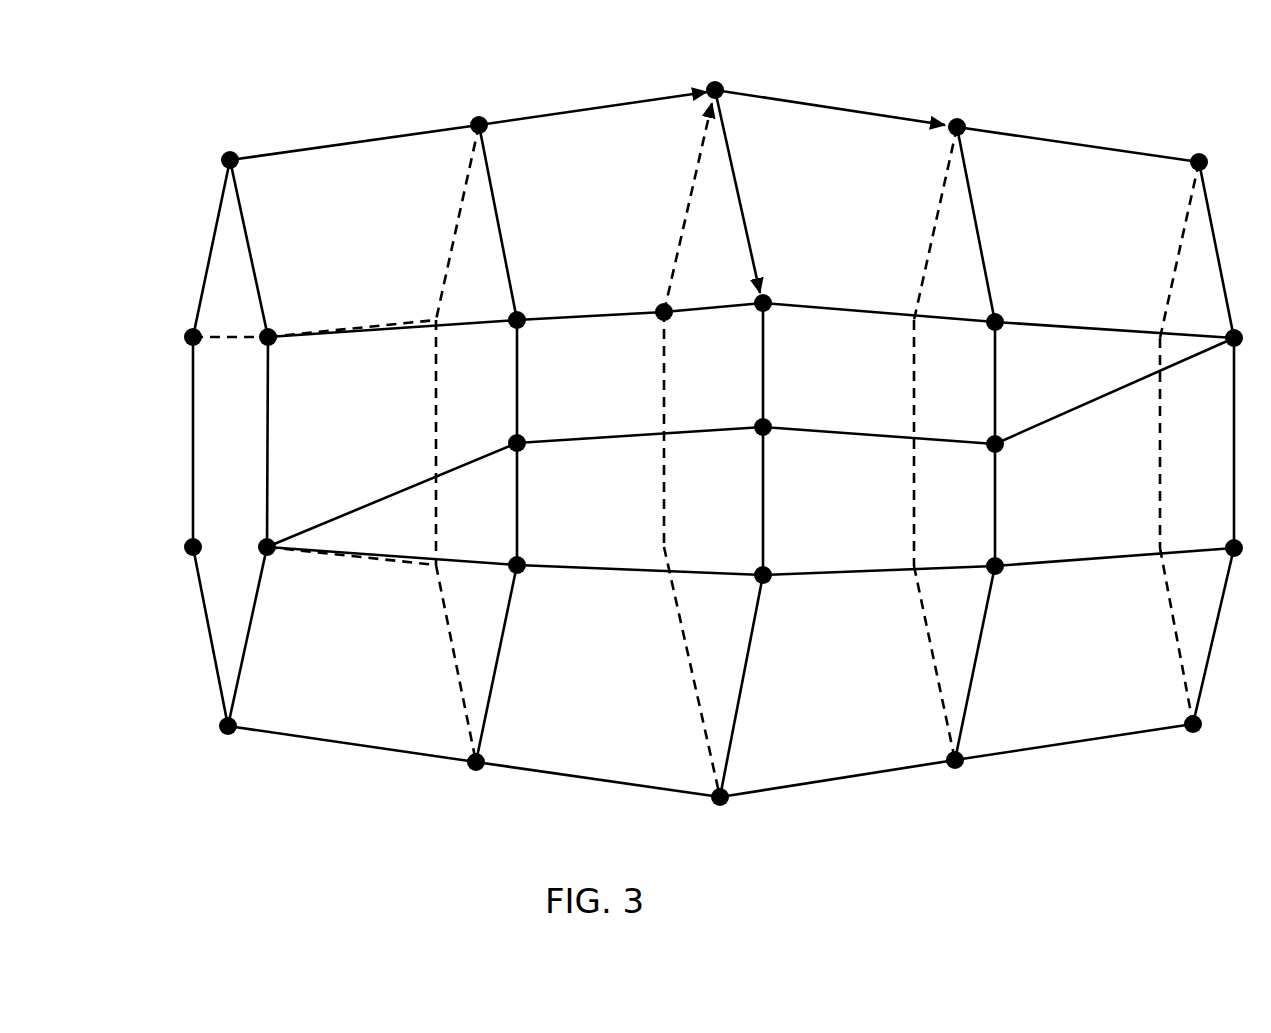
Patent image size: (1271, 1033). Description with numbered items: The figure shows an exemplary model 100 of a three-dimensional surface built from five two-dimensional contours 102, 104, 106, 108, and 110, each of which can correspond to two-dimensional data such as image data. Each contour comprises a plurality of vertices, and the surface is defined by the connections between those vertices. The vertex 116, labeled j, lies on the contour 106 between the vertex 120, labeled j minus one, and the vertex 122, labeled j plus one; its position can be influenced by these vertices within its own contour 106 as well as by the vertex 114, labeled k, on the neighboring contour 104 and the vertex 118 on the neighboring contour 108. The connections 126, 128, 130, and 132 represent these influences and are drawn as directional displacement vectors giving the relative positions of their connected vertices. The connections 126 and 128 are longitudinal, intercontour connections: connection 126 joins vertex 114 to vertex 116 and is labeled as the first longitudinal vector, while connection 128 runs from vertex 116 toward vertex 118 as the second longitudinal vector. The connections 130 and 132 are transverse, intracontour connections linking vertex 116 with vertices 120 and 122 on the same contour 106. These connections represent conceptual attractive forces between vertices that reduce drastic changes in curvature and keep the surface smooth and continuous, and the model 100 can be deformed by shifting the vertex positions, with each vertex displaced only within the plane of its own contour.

The model 100 is at (1082, 88).
The two-dimensional contour 102 is at (288, 760).
The two-dimensional contour 104 is at (533, 787).
The two-dimensional contour 106 is at (777, 815).
The two-dimensional contour 108 is at (1016, 784).
The two-dimensional contour 110 is at (1248, 750).
The vertex 114 is at (480, 112).
The vertex 116 is at (712, 83).
The vertex 118 is at (958, 117).
The vertex 120 is at (665, 303).
The vertex 122 is at (768, 297).
The longitudinal connection 126 is at (558, 110).
The longitudinal connection 128 is at (855, 108).
The transverse connection 130 is at (680, 243).
The transverse connection 132 is at (740, 193).